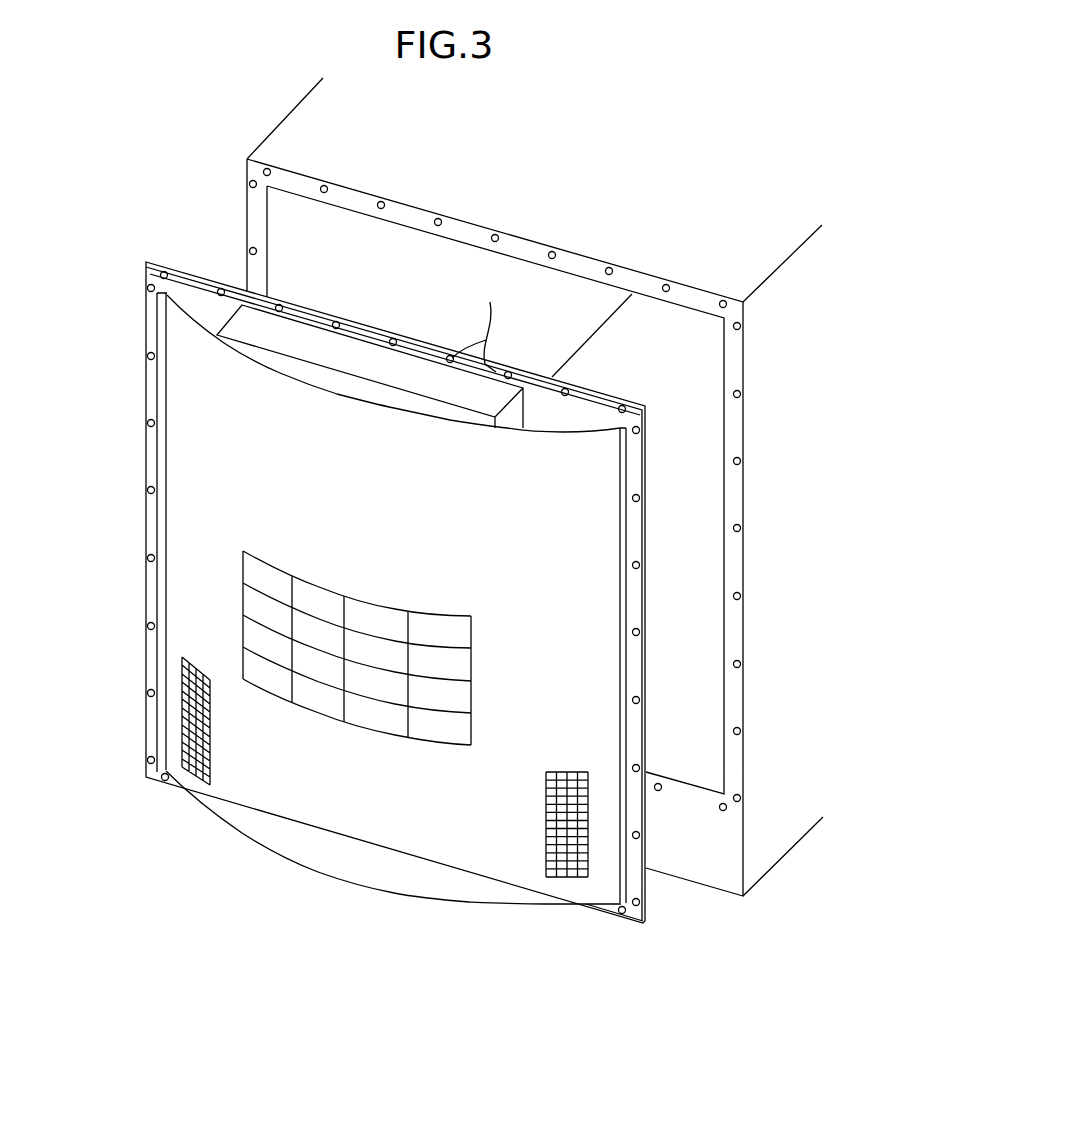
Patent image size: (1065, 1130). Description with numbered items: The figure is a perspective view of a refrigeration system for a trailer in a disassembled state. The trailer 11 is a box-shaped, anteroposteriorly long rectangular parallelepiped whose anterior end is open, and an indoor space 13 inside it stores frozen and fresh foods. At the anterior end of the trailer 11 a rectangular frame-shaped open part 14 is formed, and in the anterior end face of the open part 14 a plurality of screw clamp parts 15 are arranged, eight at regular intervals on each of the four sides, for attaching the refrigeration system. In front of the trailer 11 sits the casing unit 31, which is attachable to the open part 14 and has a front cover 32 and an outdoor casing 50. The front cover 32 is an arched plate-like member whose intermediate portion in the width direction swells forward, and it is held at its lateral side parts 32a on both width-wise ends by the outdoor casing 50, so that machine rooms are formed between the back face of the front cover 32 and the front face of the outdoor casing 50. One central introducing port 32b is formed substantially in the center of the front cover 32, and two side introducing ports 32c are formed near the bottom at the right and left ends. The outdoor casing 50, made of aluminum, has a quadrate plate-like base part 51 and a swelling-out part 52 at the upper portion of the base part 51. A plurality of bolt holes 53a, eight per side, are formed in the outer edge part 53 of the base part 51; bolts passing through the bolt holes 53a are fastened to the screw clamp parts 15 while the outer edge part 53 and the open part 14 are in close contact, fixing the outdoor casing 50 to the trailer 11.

The trailer 11 is at (273, 131).
The indoor space 13 is at (282, 227).
The open part 14 is at (365, 192).
The screw clamp parts 15 is at (441, 222).
The casing unit 31 is at (129, 320).
The front cover 32 is at (187, 412).
The lateral side parts 32a is at (156, 465).
The central introducing port 32b is at (315, 587).
The side introducing ports 32c is at (207, 735).
The outdoor casing 50 is at (163, 267).
The base part 51 is at (596, 418).
The swelling-out part 52 is at (373, 355).
The outer edge part 53 is at (322, 318).
The bolt holes 53a is at (483, 321).